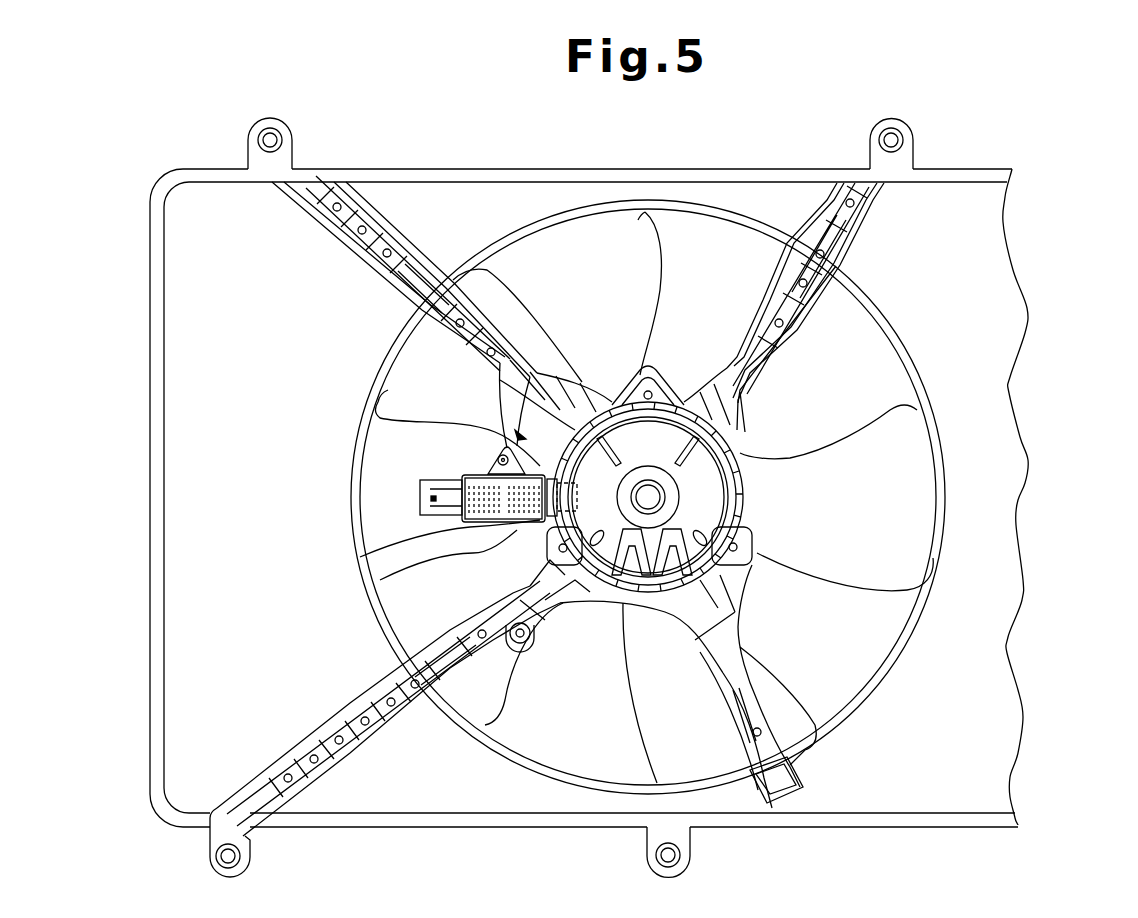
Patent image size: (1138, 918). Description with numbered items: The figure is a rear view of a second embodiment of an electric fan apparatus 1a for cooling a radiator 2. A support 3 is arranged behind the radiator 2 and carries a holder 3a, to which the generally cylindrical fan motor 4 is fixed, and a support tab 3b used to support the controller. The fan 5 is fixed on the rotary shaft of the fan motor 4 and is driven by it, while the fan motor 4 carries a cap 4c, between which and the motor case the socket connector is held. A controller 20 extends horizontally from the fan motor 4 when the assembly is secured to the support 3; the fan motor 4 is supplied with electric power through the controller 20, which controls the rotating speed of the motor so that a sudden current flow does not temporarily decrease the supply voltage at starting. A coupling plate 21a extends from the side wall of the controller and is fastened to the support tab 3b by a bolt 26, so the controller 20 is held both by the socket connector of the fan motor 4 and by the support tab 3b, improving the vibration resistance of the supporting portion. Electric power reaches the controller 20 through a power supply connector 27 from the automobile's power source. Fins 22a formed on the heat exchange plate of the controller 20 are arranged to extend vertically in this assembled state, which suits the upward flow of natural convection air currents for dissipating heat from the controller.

The electric fan apparatus 1a is at (1061, 189).
The radiator 2 is at (422, 182).
The support 3 is at (763, 341).
The holder 3a is at (748, 566).
The support tab 3b is at (522, 432).
The fan motor 4 is at (700, 452).
The cap 4c is at (722, 490).
The fan 5 is at (662, 245).
The controller 20 is at (460, 473).
The coupling plate 21a is at (492, 462).
The fins 22a is at (510, 522).
The bolt 26 is at (503, 445).
The power supply connector 27 is at (420, 496).